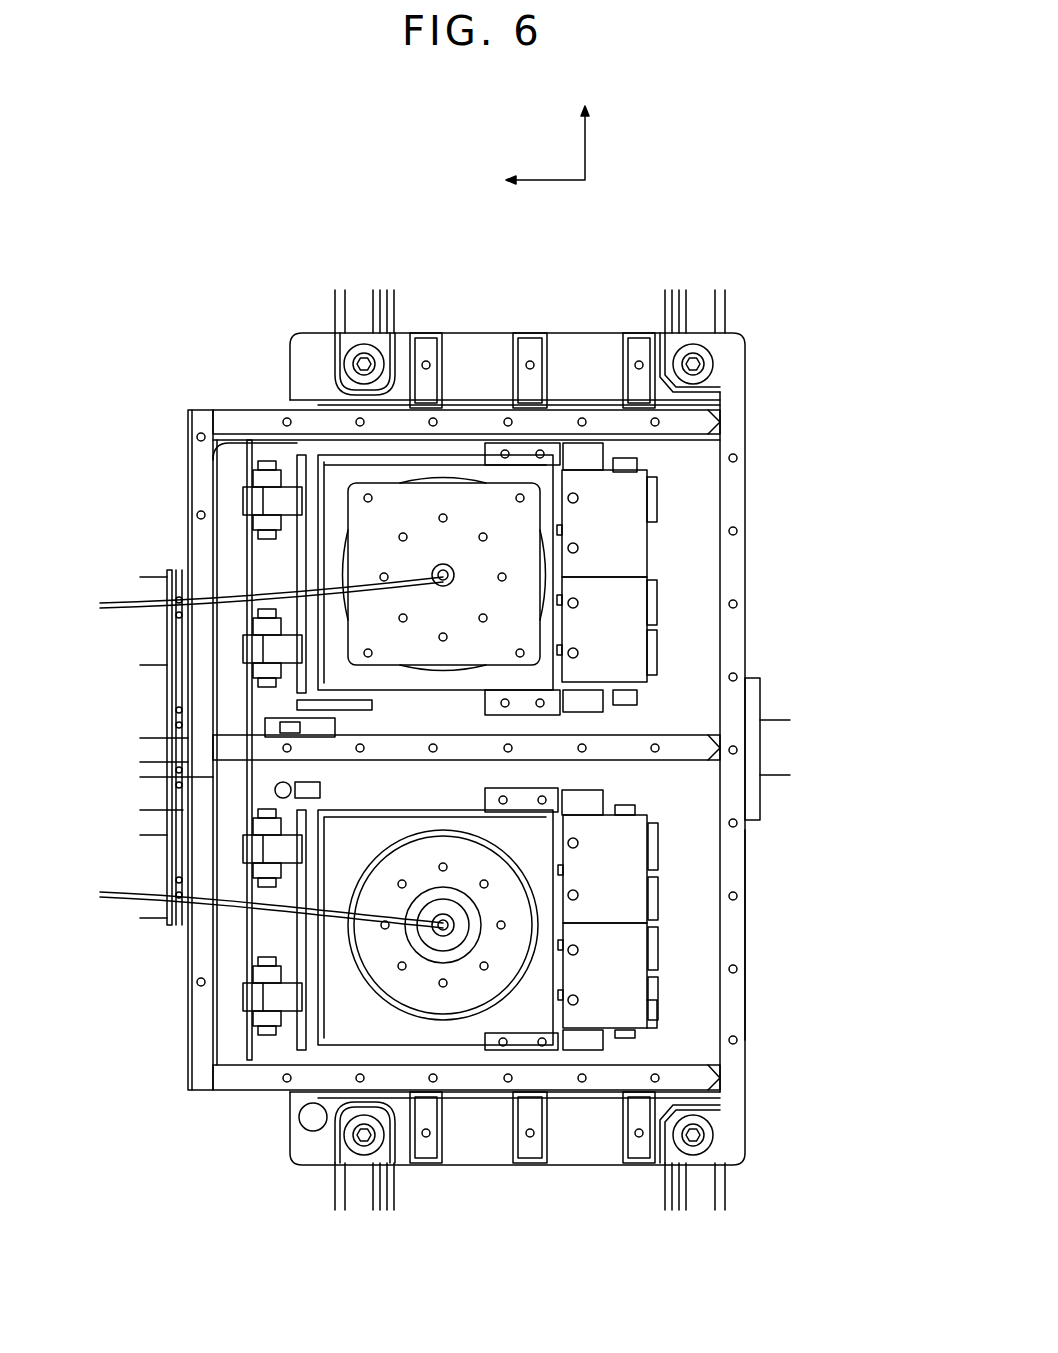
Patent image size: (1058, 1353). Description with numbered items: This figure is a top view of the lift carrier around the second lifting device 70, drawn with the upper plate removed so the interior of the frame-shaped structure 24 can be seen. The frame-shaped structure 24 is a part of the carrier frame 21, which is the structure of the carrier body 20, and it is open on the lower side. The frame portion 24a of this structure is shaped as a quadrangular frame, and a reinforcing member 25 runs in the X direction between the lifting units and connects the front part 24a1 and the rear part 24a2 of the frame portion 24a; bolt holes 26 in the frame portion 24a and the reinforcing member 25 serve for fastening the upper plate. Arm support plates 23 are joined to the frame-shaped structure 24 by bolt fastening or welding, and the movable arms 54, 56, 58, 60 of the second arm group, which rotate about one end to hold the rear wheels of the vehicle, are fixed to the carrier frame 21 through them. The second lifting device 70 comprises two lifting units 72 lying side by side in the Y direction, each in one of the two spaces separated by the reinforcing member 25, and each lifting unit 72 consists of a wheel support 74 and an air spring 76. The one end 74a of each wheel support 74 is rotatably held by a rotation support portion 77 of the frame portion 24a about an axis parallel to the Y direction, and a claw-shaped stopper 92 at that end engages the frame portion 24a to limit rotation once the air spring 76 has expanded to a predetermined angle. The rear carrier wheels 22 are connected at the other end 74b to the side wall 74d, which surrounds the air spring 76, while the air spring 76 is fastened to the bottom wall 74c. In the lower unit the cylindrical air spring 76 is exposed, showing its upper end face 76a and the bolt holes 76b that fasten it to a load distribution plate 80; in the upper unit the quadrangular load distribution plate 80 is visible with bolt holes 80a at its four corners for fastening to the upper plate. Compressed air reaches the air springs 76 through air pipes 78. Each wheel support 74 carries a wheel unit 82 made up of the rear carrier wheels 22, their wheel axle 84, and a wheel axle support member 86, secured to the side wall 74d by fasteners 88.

The carrier body 20 is at (692, 213).
The carrier frame 21 is at (112, 745).
The rear carrier wheels 22 is at (665, 1002).
The arm support plates 23 is at (565, 350).
The frame-shaped structure 24 is at (778, 401).
The frame portion 24a is at (760, 452).
The front part of the frame portion 24a1 is at (203, 1000).
The rear part of the frame portion 24a2 is at (742, 912).
The reinforcing member 25 is at (255, 748).
The bolt holes 26 is at (508, 415).
The movable arm 54 is at (355, 1200).
The movable arm 56 is at (362, 297).
The movable arm 58 is at (700, 1195).
The movable arm 60 is at (694, 298).
The second lifting device 70 is at (840, 703).
The lifting units 72 is at (680, 683).
The wheel support 74 is at (275, 448).
The one end of the wheel support 74a is at (255, 470).
The other end of the wheel support 74b is at (577, 548).
The bottom wall 74c is at (555, 672).
The side wall 74d is at (330, 812).
The air spring 76 is at (446, 480).
The upper end face of the air spring 76a is at (451, 1000).
The bolt holes 76b is at (445, 990).
The rotation support portions 77 is at (235, 548).
The air pipes 78 is at (275, 582).
The load distribution plate 80 is at (388, 499).
The bolt holes 80a is at (523, 492).
The wheel unit 82 is at (680, 507).
The wheel axle 84 is at (630, 1037).
The wheel axle support member 86 is at (612, 887).
The fastener 88 is at (578, 952).
The stopper 92 is at (255, 505).